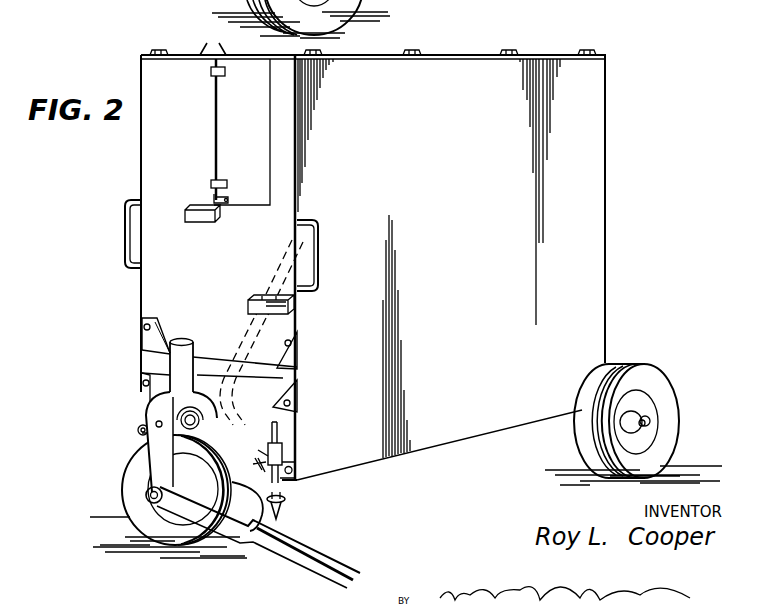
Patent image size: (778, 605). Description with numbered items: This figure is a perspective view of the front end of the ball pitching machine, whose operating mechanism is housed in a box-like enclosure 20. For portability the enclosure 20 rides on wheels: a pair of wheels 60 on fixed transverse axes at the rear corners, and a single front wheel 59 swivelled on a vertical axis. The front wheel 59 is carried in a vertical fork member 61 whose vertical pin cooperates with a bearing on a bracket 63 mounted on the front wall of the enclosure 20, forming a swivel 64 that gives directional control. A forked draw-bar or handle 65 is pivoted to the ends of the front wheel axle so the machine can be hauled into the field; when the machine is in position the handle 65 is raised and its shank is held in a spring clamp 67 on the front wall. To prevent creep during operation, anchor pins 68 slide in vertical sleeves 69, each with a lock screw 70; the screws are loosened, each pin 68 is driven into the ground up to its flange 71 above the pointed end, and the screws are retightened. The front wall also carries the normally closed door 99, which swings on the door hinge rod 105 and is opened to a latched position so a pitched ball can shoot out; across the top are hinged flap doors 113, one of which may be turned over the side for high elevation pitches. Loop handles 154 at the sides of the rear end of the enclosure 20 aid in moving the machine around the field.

The box-like enclosure 20 is at (582, 108).
The door 99 is at (262, 150).
The door hinge rod 105 is at (217, 123).
The flap doors 113 is at (218, 39).
The loop handles 154 is at (125, 232).
The spring clamp 67 is at (262, 308).
The bracket 63 is at (212, 366).
The swivel 64 is at (181, 358).
The fork member 61 is at (165, 441).
The front wheel 59 is at (140, 509).
The forked draw-bar or handle 65 is at (273, 542).
The anchor pins 68 is at (283, 432).
The vertical sleeves 69 is at (284, 456).
The lock screw 70 is at (283, 480).
The flange 71 is at (283, 506).
The rear wheels 60 is at (675, 432).